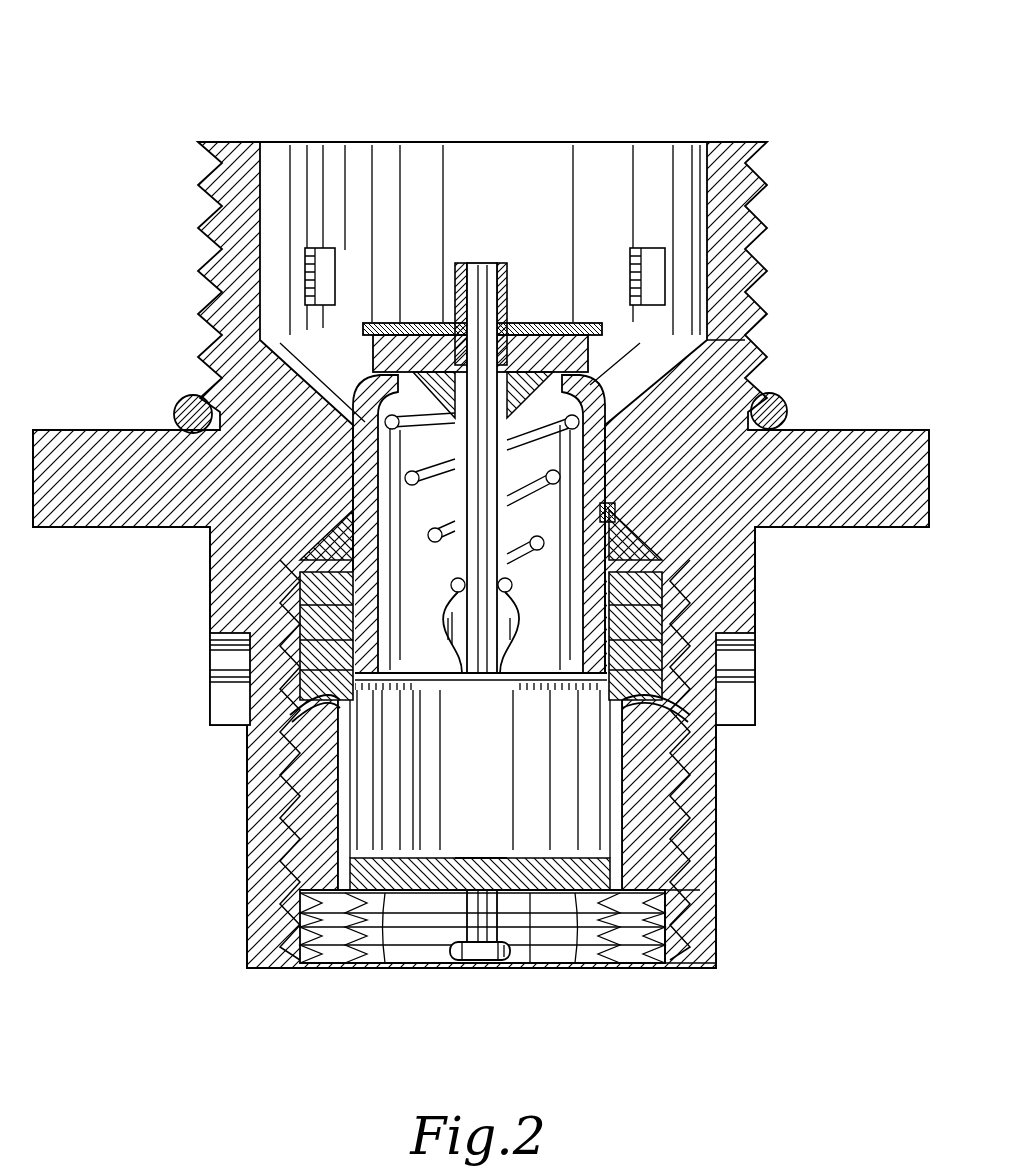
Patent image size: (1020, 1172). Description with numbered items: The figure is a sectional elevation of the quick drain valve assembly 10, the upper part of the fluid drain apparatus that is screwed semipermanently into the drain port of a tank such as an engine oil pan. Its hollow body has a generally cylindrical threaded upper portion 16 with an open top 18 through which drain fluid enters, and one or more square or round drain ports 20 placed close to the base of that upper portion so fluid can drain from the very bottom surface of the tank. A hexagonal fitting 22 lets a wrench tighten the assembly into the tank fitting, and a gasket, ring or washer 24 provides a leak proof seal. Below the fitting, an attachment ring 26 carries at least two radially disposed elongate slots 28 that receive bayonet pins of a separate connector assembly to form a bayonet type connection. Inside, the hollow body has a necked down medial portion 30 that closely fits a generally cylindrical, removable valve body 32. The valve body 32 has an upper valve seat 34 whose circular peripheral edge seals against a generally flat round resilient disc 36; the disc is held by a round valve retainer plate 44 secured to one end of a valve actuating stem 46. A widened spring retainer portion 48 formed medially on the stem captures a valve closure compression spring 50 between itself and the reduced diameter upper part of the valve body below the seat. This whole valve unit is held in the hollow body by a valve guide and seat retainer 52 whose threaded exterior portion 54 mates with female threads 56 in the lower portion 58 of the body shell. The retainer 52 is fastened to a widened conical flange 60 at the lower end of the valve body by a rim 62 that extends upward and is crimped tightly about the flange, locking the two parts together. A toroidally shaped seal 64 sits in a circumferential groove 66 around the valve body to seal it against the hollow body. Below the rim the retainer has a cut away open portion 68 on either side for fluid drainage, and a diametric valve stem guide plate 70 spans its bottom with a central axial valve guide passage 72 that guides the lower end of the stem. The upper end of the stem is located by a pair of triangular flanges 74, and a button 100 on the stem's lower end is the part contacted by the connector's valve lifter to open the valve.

The quick drain valve assembly 10 is at (375, 1035).
The threaded upper portion 16 is at (198, 258).
The open top 18 is at (362, 141).
The drain ports 20 is at (336, 256).
The hexagonal fitting 22 is at (86, 430).
The gasket 24 is at (178, 406).
The attachment ring 26 is at (210, 600).
The elongate slots 28 is at (210, 680).
The necked down medial portion 30 is at (677, 347).
The valve body 32 is at (700, 388).
The upper valve seat 34 is at (600, 380).
The resilient disc 36 is at (522, 362).
The valve retainer plate 44 is at (428, 322).
The valve actuating stem 46 is at (502, 752).
The spring retainer portion 48 is at (518, 648).
The valve closure compression spring 50 is at (527, 555).
The valve guide and seat retainer 52 is at (646, 962).
The threaded exterior portion 54 is at (705, 787).
The female threads 56 is at (588, 965).
The lower portion 58 is at (716, 907).
The conical flange 60 is at (608, 698).
The rim 62 is at (685, 620).
The toroidal seal 64 is at (650, 556).
The circumferential groove 66 is at (597, 513).
The cut away open portion 68 is at (534, 806).
The valve stem guide plate 70 is at (415, 895).
The valve guide passage 72 is at (462, 858).
The triangular flanges 74 is at (507, 325).
The button 100 is at (474, 963).